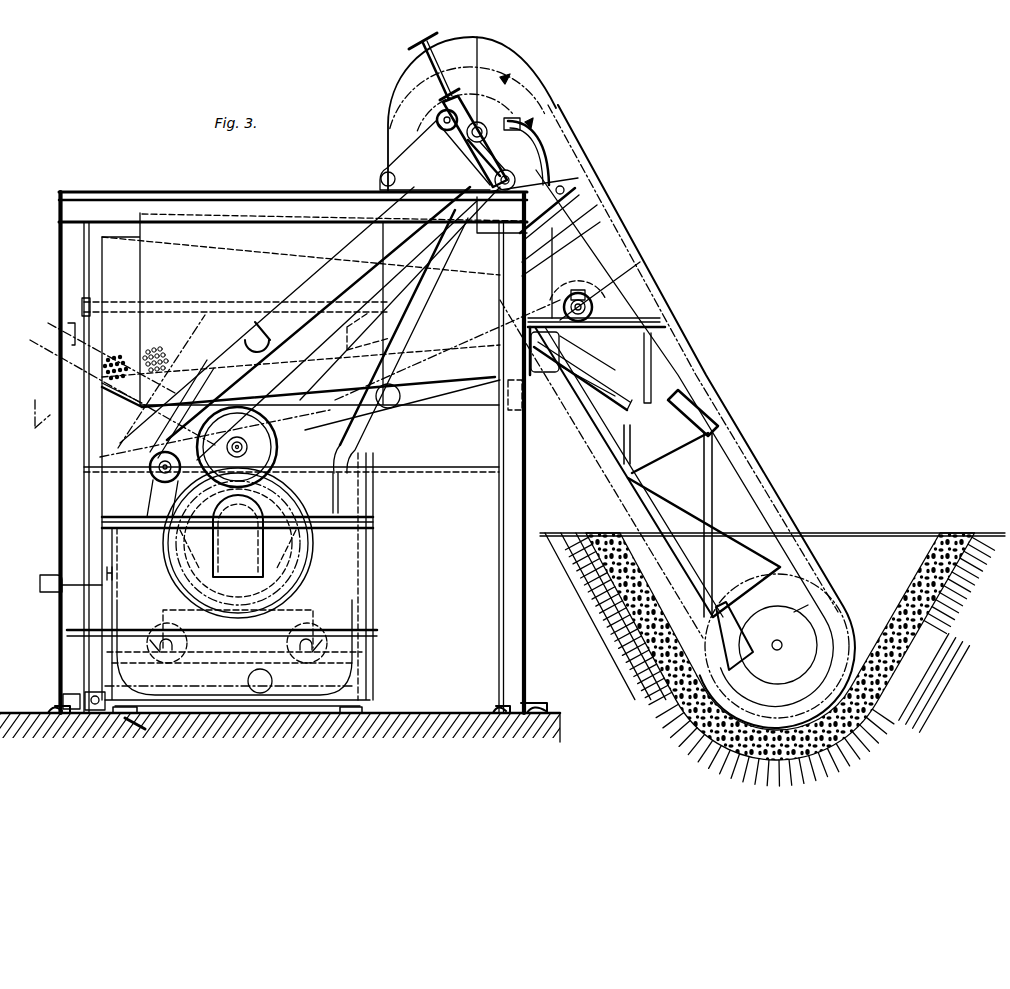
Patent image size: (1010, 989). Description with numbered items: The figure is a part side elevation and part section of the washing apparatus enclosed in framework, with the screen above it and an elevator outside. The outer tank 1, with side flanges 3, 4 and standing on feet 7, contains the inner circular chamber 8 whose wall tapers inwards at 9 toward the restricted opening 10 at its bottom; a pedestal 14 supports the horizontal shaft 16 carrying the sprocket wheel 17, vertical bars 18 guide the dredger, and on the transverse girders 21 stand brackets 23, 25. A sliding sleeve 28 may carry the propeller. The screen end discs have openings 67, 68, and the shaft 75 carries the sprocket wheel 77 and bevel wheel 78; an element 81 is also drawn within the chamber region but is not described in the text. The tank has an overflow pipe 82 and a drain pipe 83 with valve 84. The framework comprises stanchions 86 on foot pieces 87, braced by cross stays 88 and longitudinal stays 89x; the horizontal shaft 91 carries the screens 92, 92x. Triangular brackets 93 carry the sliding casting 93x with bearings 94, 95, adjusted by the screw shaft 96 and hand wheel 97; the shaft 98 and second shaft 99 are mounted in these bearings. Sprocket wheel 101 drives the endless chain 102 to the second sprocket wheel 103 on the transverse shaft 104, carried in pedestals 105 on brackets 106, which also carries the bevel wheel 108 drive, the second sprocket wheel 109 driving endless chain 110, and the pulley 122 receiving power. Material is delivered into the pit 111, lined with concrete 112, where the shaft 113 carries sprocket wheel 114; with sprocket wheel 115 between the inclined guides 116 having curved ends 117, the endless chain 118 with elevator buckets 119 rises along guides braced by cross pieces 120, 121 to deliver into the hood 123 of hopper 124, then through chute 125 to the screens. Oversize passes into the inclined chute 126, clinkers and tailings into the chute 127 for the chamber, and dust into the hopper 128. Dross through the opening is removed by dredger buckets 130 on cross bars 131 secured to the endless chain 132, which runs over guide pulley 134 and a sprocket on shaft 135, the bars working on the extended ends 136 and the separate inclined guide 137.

The outer tank 1 is at (107, 645).
The flange 3 is at (105, 552).
The flange 4 is at (92, 632).
The feet 7 is at (124, 717).
The inner circular chamber 8 is at (163, 597).
The tapering wall portion 9 is at (172, 634).
The restricted opening 10 is at (233, 651).
The pedestal 14 is at (150, 640).
The horizontal shaft 16 is at (166, 660).
The sprocket wheel 17 is at (338, 624).
The vertical bars 18 is at (335, 553).
The transverse girders 21 is at (102, 523).
The vertical bracket 23 is at (238, 543).
The vertical bracket 25 is at (160, 482).
The sliding sleeve 28 is at (338, 490).
The opening 67 is at (296, 540).
The opening 68 is at (182, 540).
The shaft 75 is at (250, 447).
The sprocket wheel 77 is at (262, 440).
The bevel wheel 78 is at (215, 386).
The cylinder 81 is at (238, 536).
The overflow pipe 82 is at (55, 590).
The drain pipe 83 is at (72, 693).
The valve 84 is at (95, 693).
The vertical stanchions 86 is at (293, 452).
The foot pieces 87 is at (50, 709).
The cross stays 88 is at (66, 330).
The longitudinal stays 89x is at (333, 212).
The horizontal shaft 91 is at (400, 322).
The outer screen 92 is at (301, 355).
The inner screen 92x is at (301, 305).
The triangular shaped brackets 93 is at (384, 173).
The casting 93x is at (492, 157).
The bearings 94 is at (458, 224).
The adjustable bearings 95 is at (483, 129).
The screw shaft 96 is at (438, 70).
The hand wheel 97 is at (420, 50).
The horizontal shaft 98 is at (565, 188).
The second horizontal shaft 99 is at (446, 131).
The sprocket wheel 101 is at (517, 176).
The endless chain 102 is at (578, 222).
The second sprocket wheel 103 is at (595, 300).
The transverse shaft 104 is at (602, 350).
The pedestals 105 is at (662, 319).
The brackets 106 is at (667, 327).
The bevel wheel 108 is at (600, 268).
The second sprocket wheel 109 is at (580, 368).
The endless chain 110 is at (447, 350).
The pit 111 is at (772, 547).
The concrete 112 is at (905, 600).
The shaft 113 is at (782, 645).
The sprocket wheel 114 is at (806, 668).
The sprocket wheel 115 is at (548, 130).
The inclined guides 116 is at (690, 380).
The curved ends 117 is at (556, 158).
The endless chain 118 is at (726, 636).
The elevator buckets 119 is at (770, 490).
The cross pieces 120 is at (737, 599).
The cross pieces 121 is at (631, 441).
The sprocket wheel or pulley 122 is at (595, 308).
The hood 123 is at (392, 101).
The hopper 124 is at (388, 268).
The chute 125 is at (346, 346).
The inclined chute 126 is at (47, 402).
The chute 127 is at (112, 401).
The hopper 128 is at (321, 403).
The dredger buckets 130 is at (325, 507).
The cross bars 131 is at (243, 672).
The endless chain 132 is at (195, 677).
The guide pulley 134 is at (580, 184).
The shaft 135 is at (150, 480).
The extended ends 136 is at (398, 362).
The separate inclined guide 137 is at (358, 262).